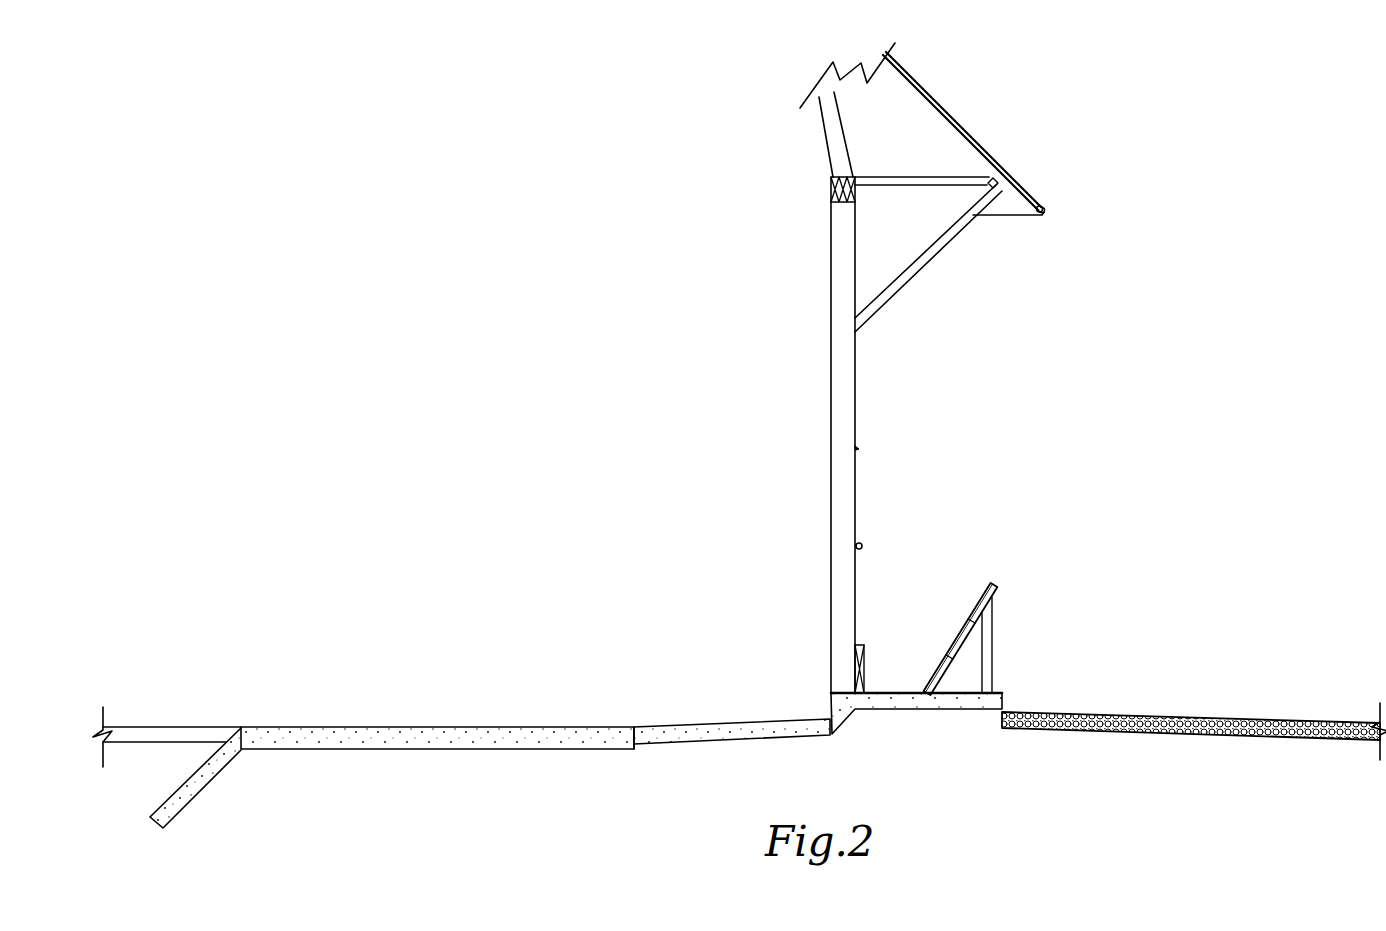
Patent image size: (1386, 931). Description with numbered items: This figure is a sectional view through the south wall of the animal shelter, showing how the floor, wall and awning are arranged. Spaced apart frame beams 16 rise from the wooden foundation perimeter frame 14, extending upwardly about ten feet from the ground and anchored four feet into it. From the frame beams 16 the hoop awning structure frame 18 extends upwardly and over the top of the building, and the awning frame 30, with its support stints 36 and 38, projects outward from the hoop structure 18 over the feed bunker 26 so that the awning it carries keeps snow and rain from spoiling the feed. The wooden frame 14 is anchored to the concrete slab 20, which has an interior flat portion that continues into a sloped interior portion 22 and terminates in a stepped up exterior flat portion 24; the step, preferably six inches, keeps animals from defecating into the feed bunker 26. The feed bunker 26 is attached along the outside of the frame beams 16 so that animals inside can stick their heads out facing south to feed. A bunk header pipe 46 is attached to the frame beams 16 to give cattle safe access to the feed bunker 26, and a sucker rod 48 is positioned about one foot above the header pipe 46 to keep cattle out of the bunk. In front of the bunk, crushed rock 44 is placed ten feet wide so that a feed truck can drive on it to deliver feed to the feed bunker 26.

The wooden foundation perimeter frame 14 is at (861, 644).
The frame beams 16 is at (838, 308).
The hoop awning structure frame 18 is at (841, 128).
The concrete slab 20 is at (438, 726).
The sloped interior portion 22 is at (733, 722).
The stepped up exterior flat portion 24 is at (893, 692).
The feed bunker 26 is at (1000, 584).
The awning frame 30 is at (948, 112).
The support stint 36 is at (917, 186).
The support stint 38 is at (912, 272).
The crushed rock 44 is at (1213, 720).
The bunk header pipe 46 is at (862, 545).
The sucker rod 48 is at (858, 448).